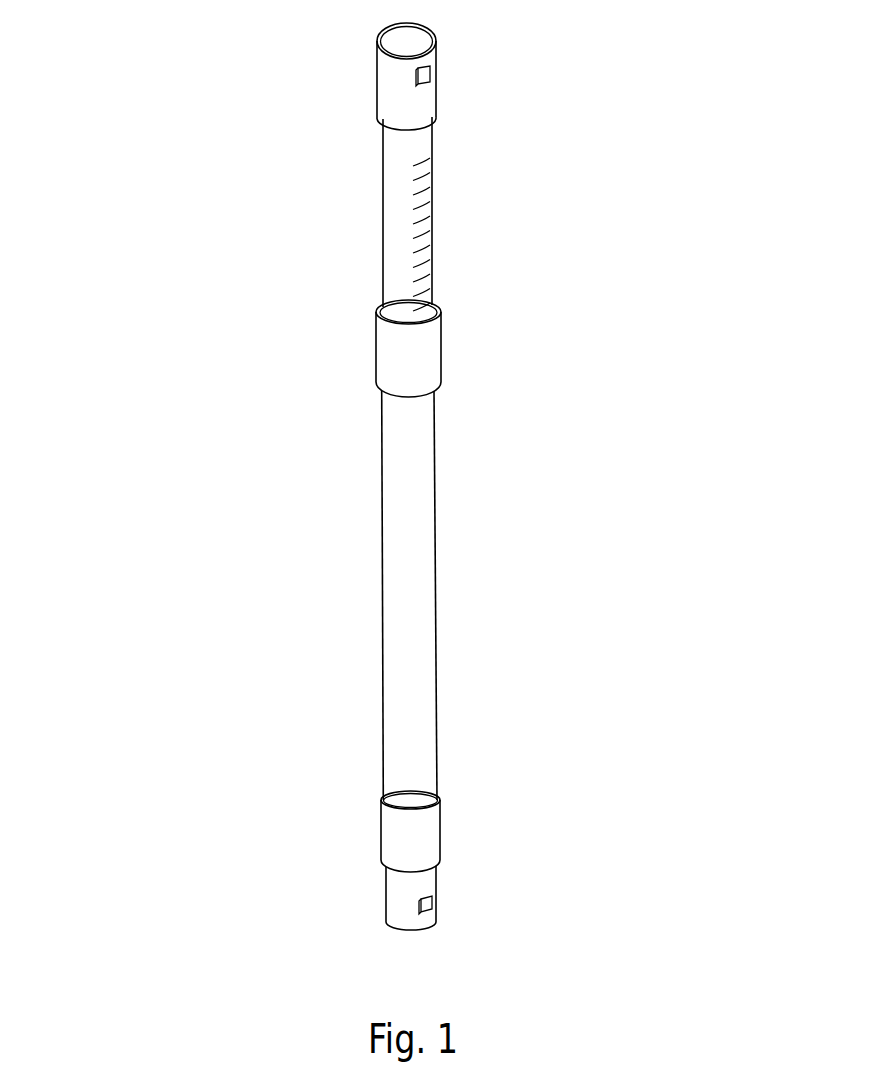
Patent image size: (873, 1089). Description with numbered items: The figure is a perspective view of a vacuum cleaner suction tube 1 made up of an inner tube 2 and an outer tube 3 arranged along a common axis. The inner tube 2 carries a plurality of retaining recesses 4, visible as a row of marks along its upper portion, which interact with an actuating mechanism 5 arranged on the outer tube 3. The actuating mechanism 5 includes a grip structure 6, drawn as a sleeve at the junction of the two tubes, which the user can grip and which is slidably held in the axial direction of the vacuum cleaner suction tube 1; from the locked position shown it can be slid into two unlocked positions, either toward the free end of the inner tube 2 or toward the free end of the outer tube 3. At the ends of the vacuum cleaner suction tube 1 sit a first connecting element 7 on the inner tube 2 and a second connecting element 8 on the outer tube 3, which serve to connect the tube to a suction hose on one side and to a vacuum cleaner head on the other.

The vacuum cleaner suction tube 1 is at (168, 158).
The inner tube 2 is at (474, 214).
The outer tube 3 is at (417, 562).
The retaining recesses 4 is at (415, 248).
The actuating mechanism 5 is at (483, 335).
The grip structure 6 is at (425, 357).
The first connecting element 7 is at (418, 108).
The second connecting element 8 is at (417, 838).